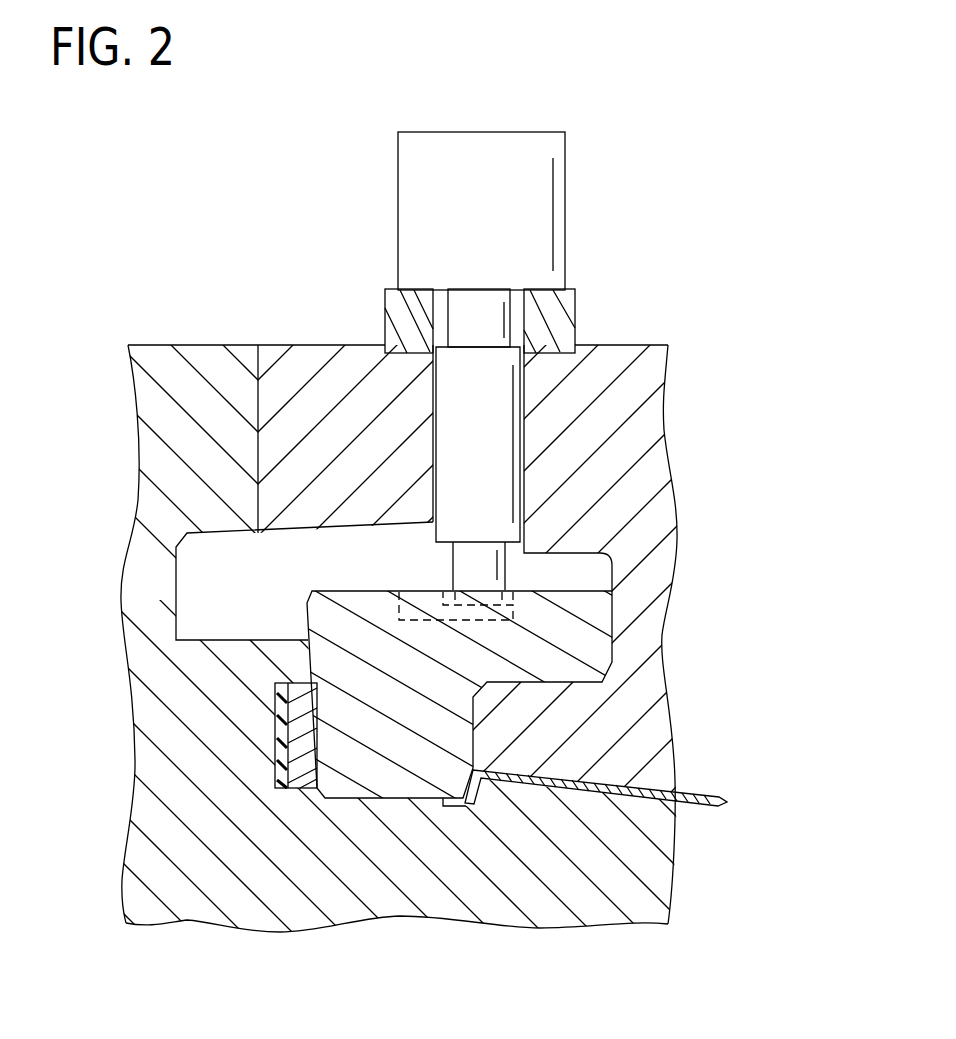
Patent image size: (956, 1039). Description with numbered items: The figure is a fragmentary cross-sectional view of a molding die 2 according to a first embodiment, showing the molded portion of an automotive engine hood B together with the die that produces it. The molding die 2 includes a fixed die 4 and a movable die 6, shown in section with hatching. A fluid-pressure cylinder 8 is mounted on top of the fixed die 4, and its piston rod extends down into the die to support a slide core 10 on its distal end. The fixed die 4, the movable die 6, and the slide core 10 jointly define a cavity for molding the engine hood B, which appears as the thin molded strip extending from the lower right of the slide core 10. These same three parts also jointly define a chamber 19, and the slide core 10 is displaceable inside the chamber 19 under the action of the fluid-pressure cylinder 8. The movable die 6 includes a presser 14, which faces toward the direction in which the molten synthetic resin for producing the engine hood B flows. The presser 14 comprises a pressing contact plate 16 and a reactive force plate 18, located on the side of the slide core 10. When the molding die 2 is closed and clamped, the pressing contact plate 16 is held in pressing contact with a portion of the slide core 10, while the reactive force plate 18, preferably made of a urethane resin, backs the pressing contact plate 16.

The molding die 2 is at (160, 138).
The fixed die 4 is at (652, 473).
The movable die 6 is at (187, 892).
The fluid-pressure cylinder 8 is at (410, 180).
The slide core 10 is at (588, 633).
The presser 14 is at (274, 733).
The pressing contact plate 16 is at (310, 772).
The reactive force plate 18 is at (286, 765).
The chamber 19 is at (304, 581).
The automotive engine hood B is at (697, 805).